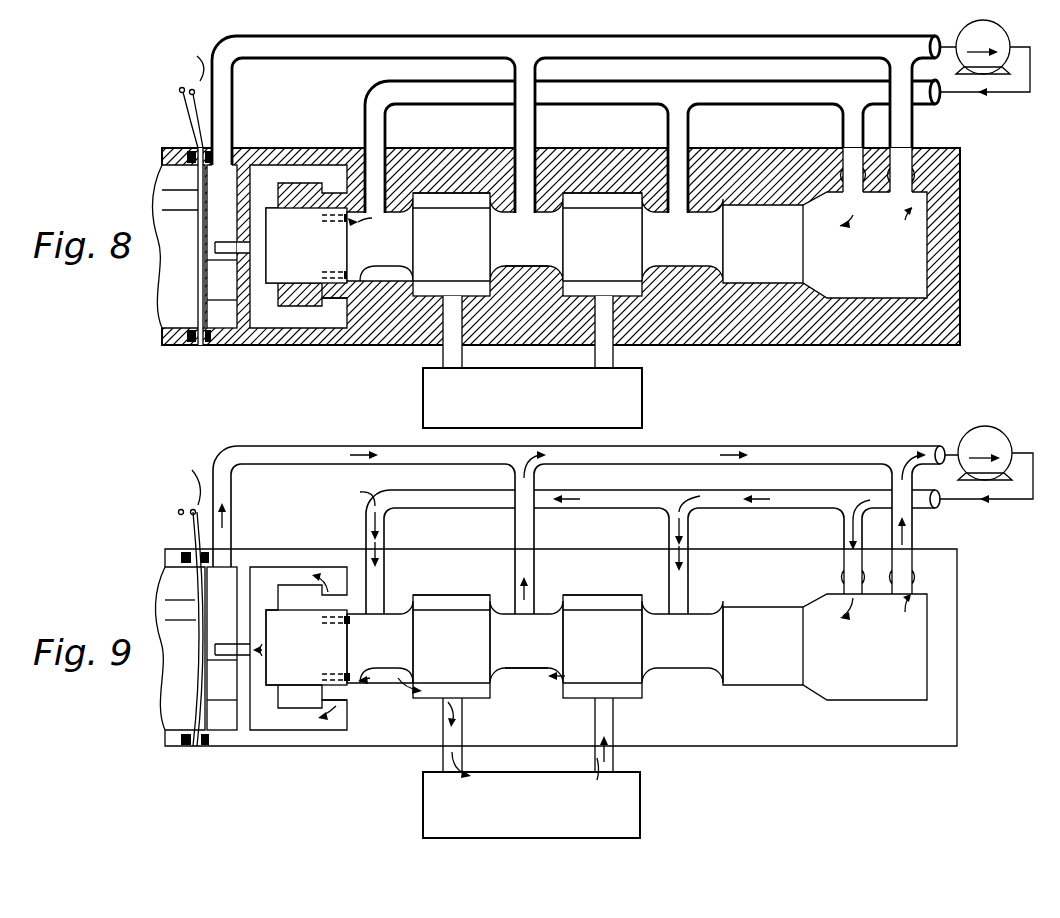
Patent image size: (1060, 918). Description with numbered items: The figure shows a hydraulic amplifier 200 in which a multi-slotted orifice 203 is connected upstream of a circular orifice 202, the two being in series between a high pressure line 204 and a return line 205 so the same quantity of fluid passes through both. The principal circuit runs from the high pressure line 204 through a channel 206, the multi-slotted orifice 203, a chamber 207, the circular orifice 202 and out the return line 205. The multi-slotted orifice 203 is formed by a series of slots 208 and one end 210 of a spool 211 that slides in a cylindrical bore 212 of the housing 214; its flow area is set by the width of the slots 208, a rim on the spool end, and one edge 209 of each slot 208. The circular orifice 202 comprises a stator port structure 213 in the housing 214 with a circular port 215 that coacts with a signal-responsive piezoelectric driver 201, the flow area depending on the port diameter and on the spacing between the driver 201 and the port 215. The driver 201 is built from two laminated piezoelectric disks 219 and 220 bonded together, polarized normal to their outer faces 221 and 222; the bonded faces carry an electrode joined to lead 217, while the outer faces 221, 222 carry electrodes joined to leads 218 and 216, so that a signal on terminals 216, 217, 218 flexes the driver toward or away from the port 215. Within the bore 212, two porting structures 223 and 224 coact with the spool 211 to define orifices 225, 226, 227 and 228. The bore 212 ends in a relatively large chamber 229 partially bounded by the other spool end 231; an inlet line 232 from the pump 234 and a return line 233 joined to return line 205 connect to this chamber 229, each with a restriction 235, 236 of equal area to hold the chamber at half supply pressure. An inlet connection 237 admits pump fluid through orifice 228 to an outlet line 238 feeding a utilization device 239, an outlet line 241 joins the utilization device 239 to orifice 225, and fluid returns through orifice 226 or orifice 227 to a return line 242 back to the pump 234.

In FIG. 8, the hydraulic amplifier 200 is at (362, 347).
In FIG. 9, the hydraulic amplifier 200 is at (368, 750).
In FIG. 8, the piezoelectric driver 201 is at (197, 258).
In FIG. 9, the piezoelectric driver 201 is at (198, 700).
In FIG. 8, the circular orifice 202 is at (213, 254).
In FIG. 9, the circular orifice 202 is at (217, 659).
In FIG. 8, the multi-slotted orifice 203 is at (349, 277).
In FIG. 9, the multi-slotted orifice 203 is at (349, 681).
In FIG. 8, the high pressure line 204 is at (387, 127).
In FIG. 9, the high pressure line 204 is at (386, 538).
In FIG. 8, the return line 205 is at (233, 118).
In FIG. 9, the return line 205 is at (579, 506).
In FIG. 8, the channel 206 is at (362, 268).
In FIG. 9, the channel 206 is at (372, 676).
In FIG. 8, the chamber 207 is at (318, 326).
In FIG. 9, the chamber 207 is at (303, 727).
In FIG. 8, the slot 208 is at (348, 270).
In FIG. 9, the slot 208 is at (356, 666).
In FIG. 8, the edge of slot 209 is at (352, 211).
In FIG. 9, the edge of slot 209 is at (349, 625).
In FIG. 8, the end of spool 210 is at (279, 264).
In FIG. 9, the end of spool 210 is at (325, 663).
In FIG. 8, the spool 211 is at (533, 253).
In FIG. 9, the spool 211 is at (545, 658).
In FIG. 8, the cylindrical bore 212 is at (322, 207).
In FIG. 9, the cylindrical bore 212 is at (322, 617).
In FIG. 8, the stator port structure 213 is at (244, 212).
In FIG. 9, the stator port structure 213 is at (244, 618).
In FIG. 8, the housing 214 is at (279, 150).
In FIG. 9, the housing 214 is at (281, 553).
In FIG. 8, the circular port 215 is at (216, 248).
In FIG. 9, the circular port 215 is at (216, 656).
In FIG. 8, the terminal 216 is at (189, 93).
In FIG. 9, the terminal 216 is at (179, 513).
In FIG. 8, the terminal 217 is at (182, 88).
In FIG. 9, the terminal 217 is at (180, 508).
In FIG. 8, the terminal 218 is at (187, 61).
In FIG. 9, the terminal 218 is at (182, 481).
In FIG. 8, the piezoelectric disk 219 is at (223, 246).
In FIG. 9, the piezoelectric disk 219 is at (223, 648).
In FIG. 8, the piezoelectric disk 220 is at (199, 184).
In FIG. 9, the piezoelectric disk 220 is at (198, 592).
In FIG. 8, the outer face 221 is at (198, 198).
In FIG. 9, the outer face 221 is at (198, 604).
In FIG. 8, the outer face 222 is at (197, 253).
In FIG. 9, the outer face 222 is at (198, 661).
In FIG. 8, the porting structure 223 is at (422, 188).
In FIG. 9, the porting structure 223 is at (425, 596).
In FIG. 8, the porting structure 224 is at (587, 188).
In FIG. 9, the porting structure 224 is at (595, 596).
In FIG. 8, the orifice 225 is at (423, 268).
In FIG. 9, the orifice 225 is at (420, 676).
In FIG. 8, the orifice 226 is at (491, 283).
In FIG. 9, the orifice 226 is at (495, 686).
In FIG. 8, the orifice 227 is at (572, 268).
In FIG. 9, the orifice 227 is at (575, 676).
In FIG. 8, the orifice 228 is at (643, 283).
In FIG. 9, the orifice 228 is at (647, 686).
In FIG. 8, the chamber 229 is at (885, 260).
In FIG. 9, the chamber 229 is at (889, 668).
In FIG. 8, the end of spool 231 is at (800, 246).
In FIG. 9, the end of spool 231 is at (805, 659).
In FIG. 8, the inlet line 232 is at (845, 148).
In FIG. 9, the inlet line 232 is at (853, 524).
In FIG. 8, the return line 233 is at (915, 145).
In FIG. 9, the return line 233 is at (910, 551).
In FIG. 8, the pump 234 is at (1002, 31).
In FIG. 9, the pump 234 is at (982, 426).
In FIG. 8, the restriction 235 is at (843, 171).
In FIG. 9, the restriction 235 is at (846, 580).
In FIG. 8, the restriction 236 is at (912, 162).
In FIG. 9, the restriction 236 is at (910, 575).
In FIG. 8, the inlet connection 237 is at (691, 141).
In FIG. 9, the inlet connection 237 is at (692, 542).
In FIG. 8, the outlet line 238 is at (609, 326).
In FIG. 9, the outlet line 238 is at (613, 740).
In FIG. 8, the utilization device 239 is at (642, 396).
In FIG. 9, the utilization device 239 is at (644, 802).
In FIG. 8, the outlet line 241 is at (460, 325).
In FIG. 9, the outlet line 241 is at (460, 738).
In FIG. 8, the return line 242 is at (540, 141).
In FIG. 9, the return line 242 is at (541, 542).